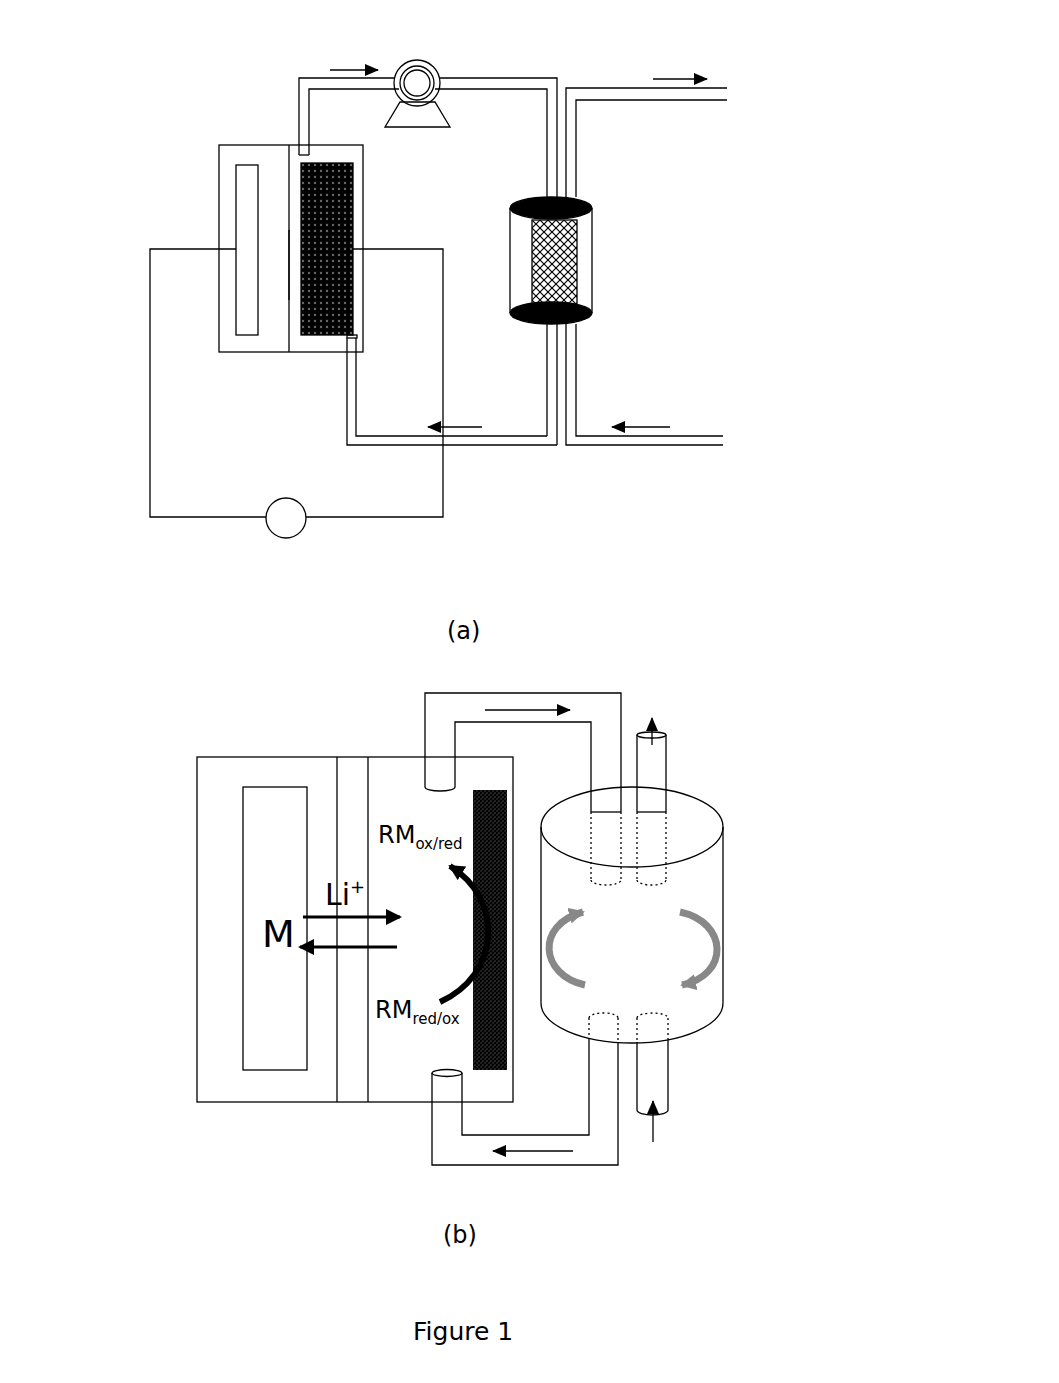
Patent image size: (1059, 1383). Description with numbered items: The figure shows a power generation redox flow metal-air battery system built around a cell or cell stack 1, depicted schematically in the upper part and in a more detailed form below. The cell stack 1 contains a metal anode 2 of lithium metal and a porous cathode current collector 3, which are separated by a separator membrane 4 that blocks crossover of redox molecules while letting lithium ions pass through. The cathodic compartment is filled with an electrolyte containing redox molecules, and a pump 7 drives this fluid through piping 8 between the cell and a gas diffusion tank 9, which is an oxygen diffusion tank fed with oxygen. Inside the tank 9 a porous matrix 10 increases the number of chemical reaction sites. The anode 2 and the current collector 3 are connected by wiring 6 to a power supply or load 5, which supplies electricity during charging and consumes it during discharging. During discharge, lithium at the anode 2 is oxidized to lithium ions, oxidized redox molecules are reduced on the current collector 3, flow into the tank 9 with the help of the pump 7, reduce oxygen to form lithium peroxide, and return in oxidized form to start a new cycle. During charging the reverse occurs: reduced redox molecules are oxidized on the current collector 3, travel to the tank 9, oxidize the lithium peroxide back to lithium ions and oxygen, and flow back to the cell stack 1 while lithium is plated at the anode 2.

The cell or cell stack 1 is at (256, 144).
The metal anode 2 is at (234, 213).
The cathode current collector 3 is at (356, 185).
The separator membrane 4 is at (284, 331).
The power supply or load 5 is at (271, 503).
The electrical circuit wiring 6 is at (446, 512).
The pump 7 is at (424, 62).
The electrolyte circulation pipes 8 is at (625, 86).
The gas diffusion tank 9 is at (598, 242).
The porous matrix 10 is at (580, 288).